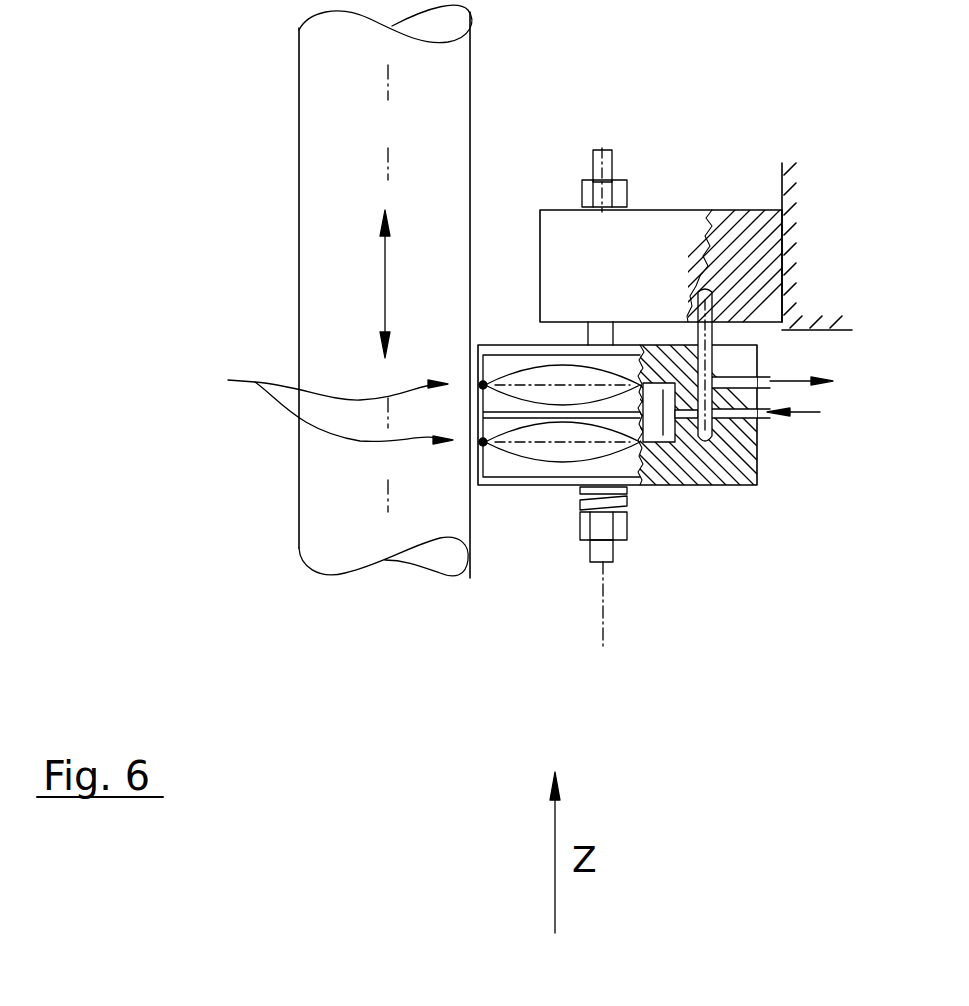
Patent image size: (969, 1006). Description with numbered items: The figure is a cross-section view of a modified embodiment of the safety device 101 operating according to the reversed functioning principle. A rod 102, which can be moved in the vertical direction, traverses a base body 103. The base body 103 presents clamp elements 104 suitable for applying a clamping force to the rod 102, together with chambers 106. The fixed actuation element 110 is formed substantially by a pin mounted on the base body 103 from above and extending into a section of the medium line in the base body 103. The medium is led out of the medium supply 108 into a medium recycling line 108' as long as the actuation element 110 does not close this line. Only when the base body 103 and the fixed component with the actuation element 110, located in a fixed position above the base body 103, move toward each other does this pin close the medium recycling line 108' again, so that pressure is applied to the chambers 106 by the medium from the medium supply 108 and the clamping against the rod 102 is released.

The safety device 101 is at (258, 507).
The rod 102 is at (316, 86).
The base body 103 is at (706, 478).
The clamp elements 104 is at (286, 399).
The chambers 106 is at (560, 388).
The medium supply 108 is at (816, 436).
The medium recycling line 108' is at (839, 377).
The fixed actuation element 110 is at (700, 297).